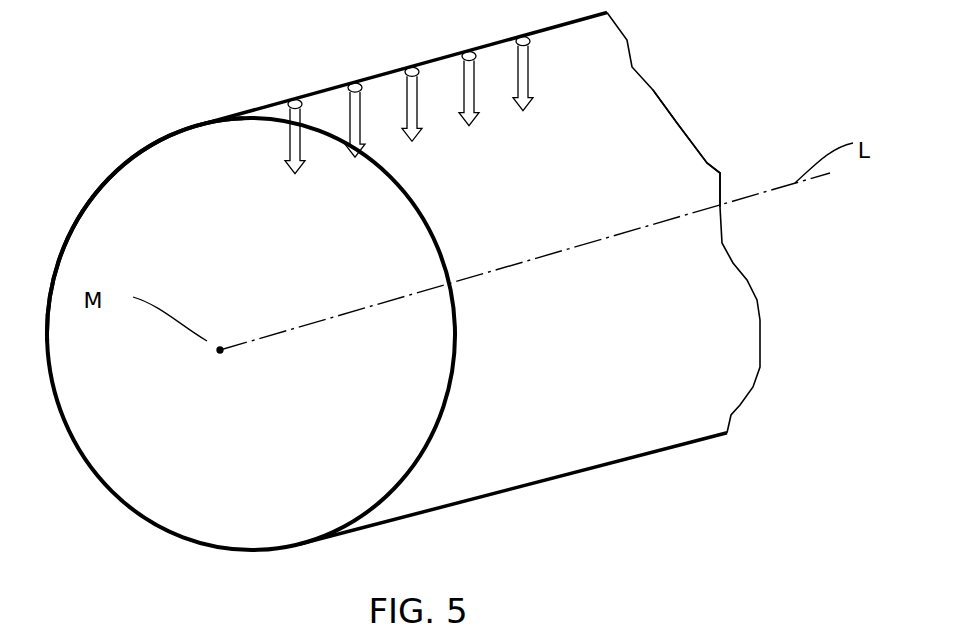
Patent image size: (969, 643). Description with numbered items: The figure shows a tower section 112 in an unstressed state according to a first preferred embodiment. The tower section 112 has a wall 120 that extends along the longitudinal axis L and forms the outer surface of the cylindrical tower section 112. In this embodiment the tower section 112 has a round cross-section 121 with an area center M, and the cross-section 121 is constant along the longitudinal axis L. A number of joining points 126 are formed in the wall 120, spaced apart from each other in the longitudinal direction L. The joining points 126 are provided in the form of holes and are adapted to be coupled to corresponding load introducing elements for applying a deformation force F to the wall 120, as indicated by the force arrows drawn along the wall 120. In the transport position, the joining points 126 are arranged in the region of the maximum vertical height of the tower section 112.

The tower section 112 is at (602, 410).
The wall 120 is at (638, 162).
The round cross-section 121 is at (177, 197).
The joining points 126 is at (284, 100).